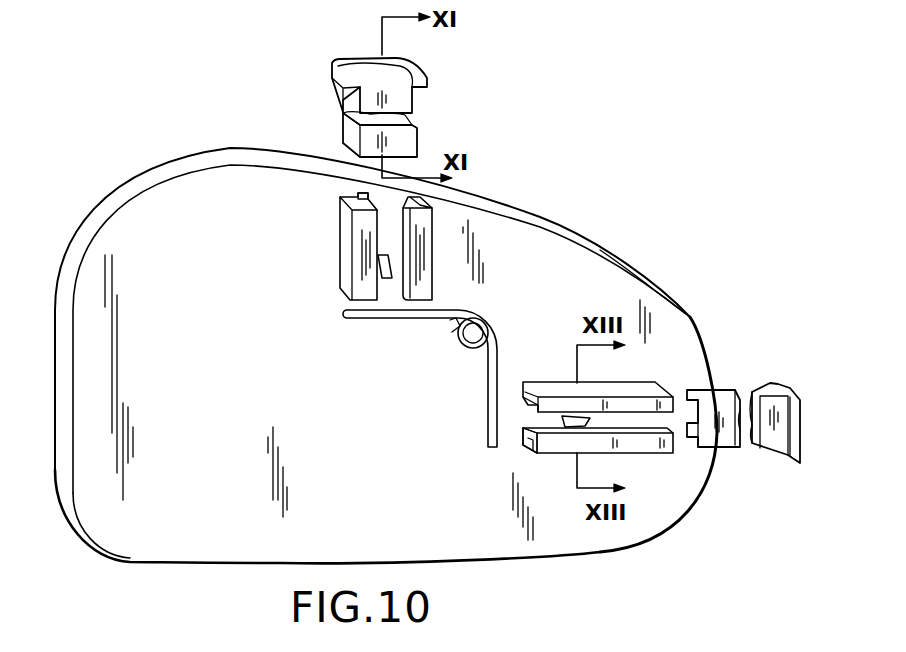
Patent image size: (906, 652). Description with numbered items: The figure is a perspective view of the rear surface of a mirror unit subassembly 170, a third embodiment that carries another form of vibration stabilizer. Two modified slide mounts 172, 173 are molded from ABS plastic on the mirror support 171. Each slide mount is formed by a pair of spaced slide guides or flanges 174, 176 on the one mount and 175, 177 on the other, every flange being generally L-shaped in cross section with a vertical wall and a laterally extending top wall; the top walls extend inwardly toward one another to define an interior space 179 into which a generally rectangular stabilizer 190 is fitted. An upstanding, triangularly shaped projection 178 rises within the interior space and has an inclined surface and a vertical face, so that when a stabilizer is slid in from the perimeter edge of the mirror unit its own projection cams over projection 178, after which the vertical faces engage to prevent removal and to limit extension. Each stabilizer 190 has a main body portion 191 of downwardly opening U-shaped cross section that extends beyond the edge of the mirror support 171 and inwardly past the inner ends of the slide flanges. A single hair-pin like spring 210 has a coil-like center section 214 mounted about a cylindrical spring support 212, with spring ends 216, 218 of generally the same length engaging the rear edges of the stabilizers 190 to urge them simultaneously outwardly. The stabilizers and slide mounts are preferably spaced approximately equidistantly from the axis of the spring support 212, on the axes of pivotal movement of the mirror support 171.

The mirror unit subassembly 170 is at (573, 140).
The mirror support 171 is at (610, 273).
The slide mount 172 is at (434, 212).
The slide mount 173 is at (667, 373).
The slide guide flange 174 is at (345, 238).
The slide guide flange 175 is at (617, 388).
The slide guide flange 176 is at (428, 248).
The slide guide flange 177 is at (642, 445).
The triangularly shaped projection 178 is at (378, 258).
The interior space 179 is at (388, 220).
The stabilizer 190 is at (432, 61).
The main body portion 191 is at (400, 100).
The hair-pin like spring 210 is at (426, 320).
The spring support 212 is at (479, 333).
The coil-like center section 214 is at (462, 350).
The spring end 216 is at (368, 315).
The spring end 218 is at (487, 422).